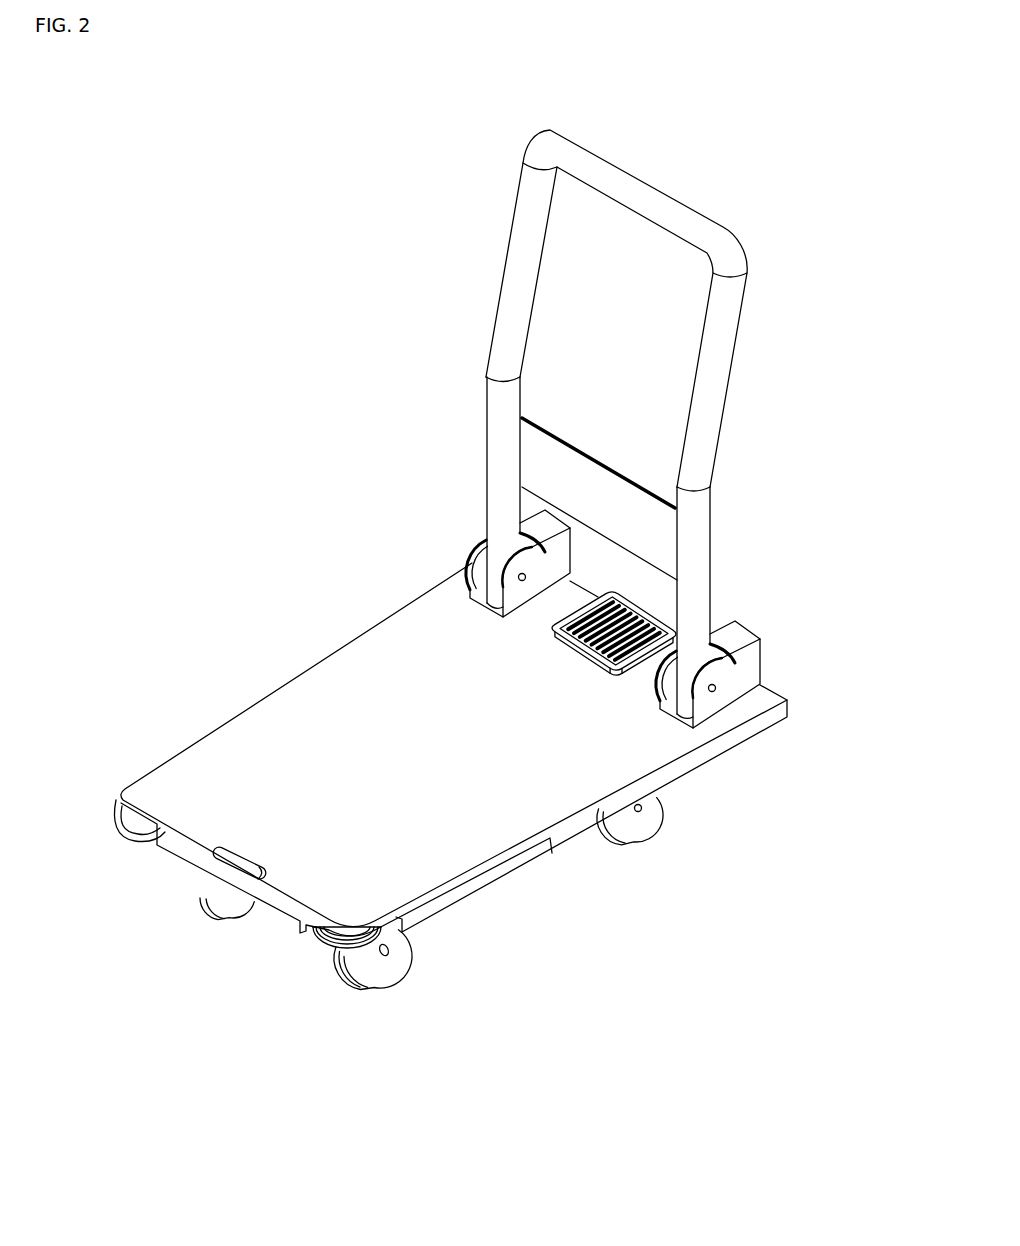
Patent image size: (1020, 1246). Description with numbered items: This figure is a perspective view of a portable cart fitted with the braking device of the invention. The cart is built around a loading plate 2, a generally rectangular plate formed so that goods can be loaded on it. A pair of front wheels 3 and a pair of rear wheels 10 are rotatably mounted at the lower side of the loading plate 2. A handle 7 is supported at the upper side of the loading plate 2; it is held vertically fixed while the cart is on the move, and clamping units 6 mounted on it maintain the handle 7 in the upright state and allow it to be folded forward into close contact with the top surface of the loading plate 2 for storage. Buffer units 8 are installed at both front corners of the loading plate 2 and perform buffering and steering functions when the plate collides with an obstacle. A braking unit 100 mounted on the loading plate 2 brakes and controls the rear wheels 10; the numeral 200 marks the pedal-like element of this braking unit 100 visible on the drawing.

The loading plate 2 is at (347, 677).
The front wheels 3 is at (378, 971).
The clamping units 6 is at (750, 663).
The handle 7 is at (642, 192).
The buffer units 8 is at (323, 941).
The rear wheels 10 is at (639, 833).
The braking unit 100 is at (585, 638).
The pedal pad 200 is at (640, 612).